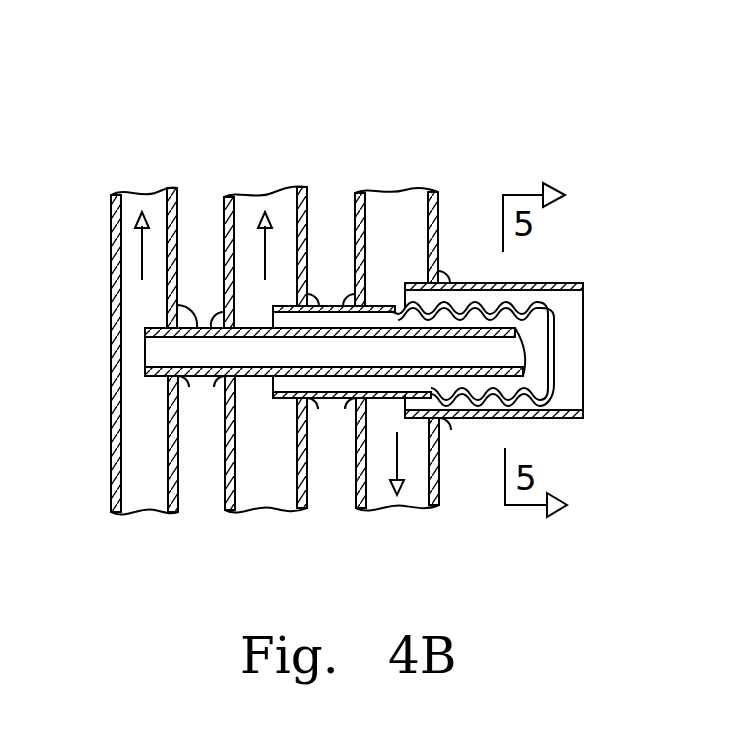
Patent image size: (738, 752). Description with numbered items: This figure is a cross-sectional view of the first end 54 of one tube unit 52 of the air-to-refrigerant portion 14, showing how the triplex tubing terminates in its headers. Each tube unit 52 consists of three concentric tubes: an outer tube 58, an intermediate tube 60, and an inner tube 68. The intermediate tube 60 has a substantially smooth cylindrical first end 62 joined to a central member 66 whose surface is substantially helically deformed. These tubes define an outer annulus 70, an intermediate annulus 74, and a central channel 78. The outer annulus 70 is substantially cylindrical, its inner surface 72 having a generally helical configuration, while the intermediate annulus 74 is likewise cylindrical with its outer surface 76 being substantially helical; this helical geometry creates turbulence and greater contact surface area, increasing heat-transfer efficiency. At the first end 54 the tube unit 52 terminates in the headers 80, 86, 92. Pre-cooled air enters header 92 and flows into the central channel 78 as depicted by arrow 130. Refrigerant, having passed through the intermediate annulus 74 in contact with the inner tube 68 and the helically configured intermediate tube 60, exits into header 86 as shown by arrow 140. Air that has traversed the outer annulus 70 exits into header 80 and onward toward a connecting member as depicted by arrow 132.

The air-to-refrigerant portion 14 is at (297, 83).
The tube unit 52 is at (568, 447).
The first end 54 is at (483, 420).
The outer tube 58 is at (582, 282).
The intermediate tube 60 is at (393, 305).
The first end of intermediate tube 62 is at (327, 306).
The central member 66 is at (512, 303).
The inner tube 68 is at (190, 327).
The outer annulus 70 is at (545, 298).
The inner surface 72 is at (543, 415).
The intermediate annulus 74 is at (513, 320).
The outer surface 76 is at (532, 380).
The central channel 78 is at (500, 350).
The header 80 is at (438, 222).
The header 86 is at (302, 205).
The header 92 is at (110, 212).
The arrow 130 is at (140, 260).
The arrow 132 is at (397, 460).
The arrow 140 is at (260, 240).